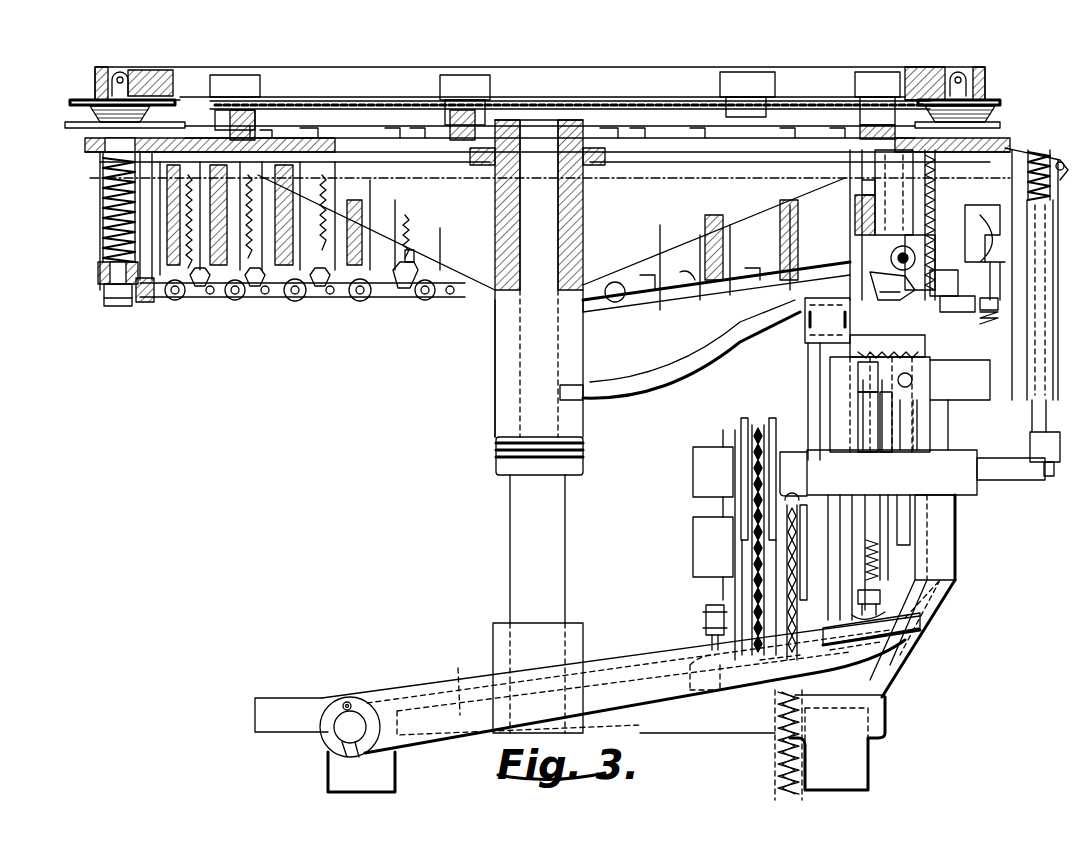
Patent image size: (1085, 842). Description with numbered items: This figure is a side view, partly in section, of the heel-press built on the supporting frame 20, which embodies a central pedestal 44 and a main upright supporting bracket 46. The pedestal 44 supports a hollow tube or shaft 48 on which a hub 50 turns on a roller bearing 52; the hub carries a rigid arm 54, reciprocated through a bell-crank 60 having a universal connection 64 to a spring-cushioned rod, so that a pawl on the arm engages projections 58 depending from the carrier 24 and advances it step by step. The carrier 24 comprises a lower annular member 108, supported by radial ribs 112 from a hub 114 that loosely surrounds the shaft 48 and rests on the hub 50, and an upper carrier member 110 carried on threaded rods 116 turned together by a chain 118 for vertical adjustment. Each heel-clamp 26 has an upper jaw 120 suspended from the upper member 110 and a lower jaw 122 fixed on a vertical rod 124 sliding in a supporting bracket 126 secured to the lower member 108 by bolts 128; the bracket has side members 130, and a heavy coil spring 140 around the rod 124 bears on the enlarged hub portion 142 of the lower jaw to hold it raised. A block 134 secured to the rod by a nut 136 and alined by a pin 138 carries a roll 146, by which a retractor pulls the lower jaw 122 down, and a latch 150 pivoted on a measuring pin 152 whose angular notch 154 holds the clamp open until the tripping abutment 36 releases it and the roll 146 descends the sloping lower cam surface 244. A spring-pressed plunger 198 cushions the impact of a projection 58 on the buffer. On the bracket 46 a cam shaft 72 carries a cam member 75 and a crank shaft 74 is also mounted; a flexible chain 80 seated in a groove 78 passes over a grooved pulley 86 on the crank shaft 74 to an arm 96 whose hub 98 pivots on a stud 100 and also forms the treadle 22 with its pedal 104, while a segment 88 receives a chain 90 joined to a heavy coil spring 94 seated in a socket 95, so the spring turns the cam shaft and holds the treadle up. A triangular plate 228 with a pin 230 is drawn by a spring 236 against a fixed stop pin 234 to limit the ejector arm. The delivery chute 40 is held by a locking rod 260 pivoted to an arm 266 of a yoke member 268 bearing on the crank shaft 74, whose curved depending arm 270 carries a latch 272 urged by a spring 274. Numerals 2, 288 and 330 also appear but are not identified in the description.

The motor 2 is at (740, 600).
The supporting frame 20 is at (865, 753).
The treadle 22 is at (608, 670).
The carrier 24 is at (105, 150).
The heel-clamps 26 is at (90, 112).
The tripping abutment 36 is at (905, 203).
The adjustable delivery chute 40 is at (1020, 140).
The central pedestal 44 is at (496, 623).
The main upright supporting bracket 46 is at (945, 600).
The hollow tube or shaft 48 is at (520, 243).
The hub 50 is at (493, 352).
The roller bearing 52 is at (495, 450).
The rigid arm 54 is at (695, 320).
The projections 58 is at (805, 238).
The bell-crank 60 is at (815, 362).
The universal connection 64 is at (822, 300).
The cam shaft 72 is at (957, 556).
The crank shaft 74 is at (1050, 476).
The member 75 is at (868, 618).
The groove 78 is at (765, 633).
The flexible chain 80 is at (758, 425).
The grooved pulley 86 is at (776, 428).
The segment 88 is at (800, 548).
The chain 90 is at (798, 567).
The heavy coil spring 94 is at (775, 752).
The socket 95 is at (777, 772).
The arm 96 is at (458, 688).
The hub 98 is at (345, 702).
The stud 100 is at (345, 740).
The pedal 104 is at (922, 632).
The lower annular member 108 is at (160, 168).
The upper carrier member 110 is at (160, 80).
The radial ribs 112 is at (372, 240).
The hub 114 is at (585, 226).
The threaded rods 116 is at (445, 72).
The chain 118 is at (530, 100).
The upper jaw 120 is at (82, 98).
The lower jaw 122 is at (65, 125).
The vertical rod 124 is at (102, 200).
The supporting bracket 126 is at (810, 140).
The bolts 128 is at (643, 123).
The side members 130 is at (100, 250).
The block 134 is at (100, 285).
The nut 136 is at (118, 306).
The pin 138 is at (335, 300).
The heavy coil spring 140 is at (102, 232).
The enlarged hub portion 142 is at (920, 90).
The roll 146 is at (162, 300).
The latch 150 is at (278, 300).
The pin 152 is at (305, 298).
The angular notch 154 is at (410, 272).
The spring-pressed plunger 198 is at (903, 248).
The triangular plate 228 is at (860, 354).
The pin 230 is at (879, 404).
The fixed stop pin 234 is at (870, 362).
The spring 236 is at (882, 372).
The lower cam surface 244 is at (893, 295).
The locking rod 260 is at (1040, 152).
The arm 266 is at (995, 480).
The yoke member 268 is at (945, 470).
The curved depending arm 270 is at (865, 543).
The latch 272 is at (925, 615).
The spring 274 is at (880, 560).
The bolt 288 is at (998, 298).
The lever 330 is at (960, 318).